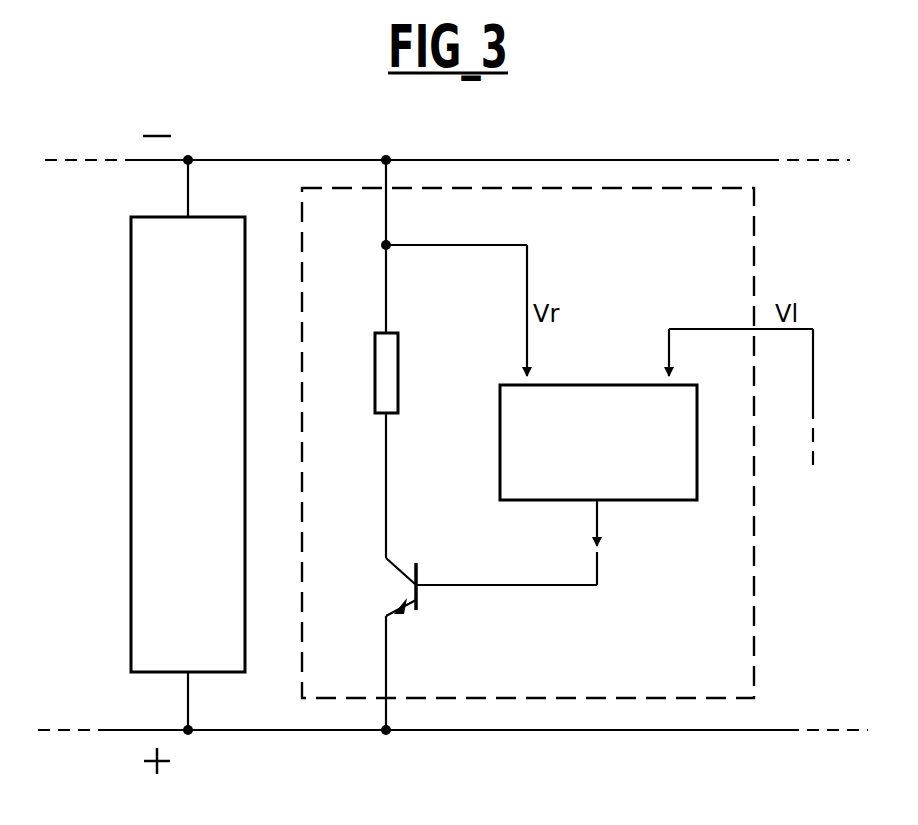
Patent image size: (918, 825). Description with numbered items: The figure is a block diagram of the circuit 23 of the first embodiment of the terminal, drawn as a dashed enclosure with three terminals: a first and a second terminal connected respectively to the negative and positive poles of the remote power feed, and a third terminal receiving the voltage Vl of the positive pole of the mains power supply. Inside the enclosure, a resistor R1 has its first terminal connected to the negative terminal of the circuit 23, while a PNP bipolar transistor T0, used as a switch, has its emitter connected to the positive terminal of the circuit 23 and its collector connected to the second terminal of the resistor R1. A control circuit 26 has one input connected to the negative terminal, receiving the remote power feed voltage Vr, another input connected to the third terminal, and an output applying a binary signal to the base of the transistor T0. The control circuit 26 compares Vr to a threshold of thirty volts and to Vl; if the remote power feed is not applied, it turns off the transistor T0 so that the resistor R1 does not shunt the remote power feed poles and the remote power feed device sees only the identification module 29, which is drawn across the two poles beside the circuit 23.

The circuit 23 is at (754, 227).
The control circuit 26 is at (604, 385).
The identification module 29 is at (131, 338).
The resistor R1 is at (399, 350).
The PNP bipolar transistor T0 is at (420, 600).